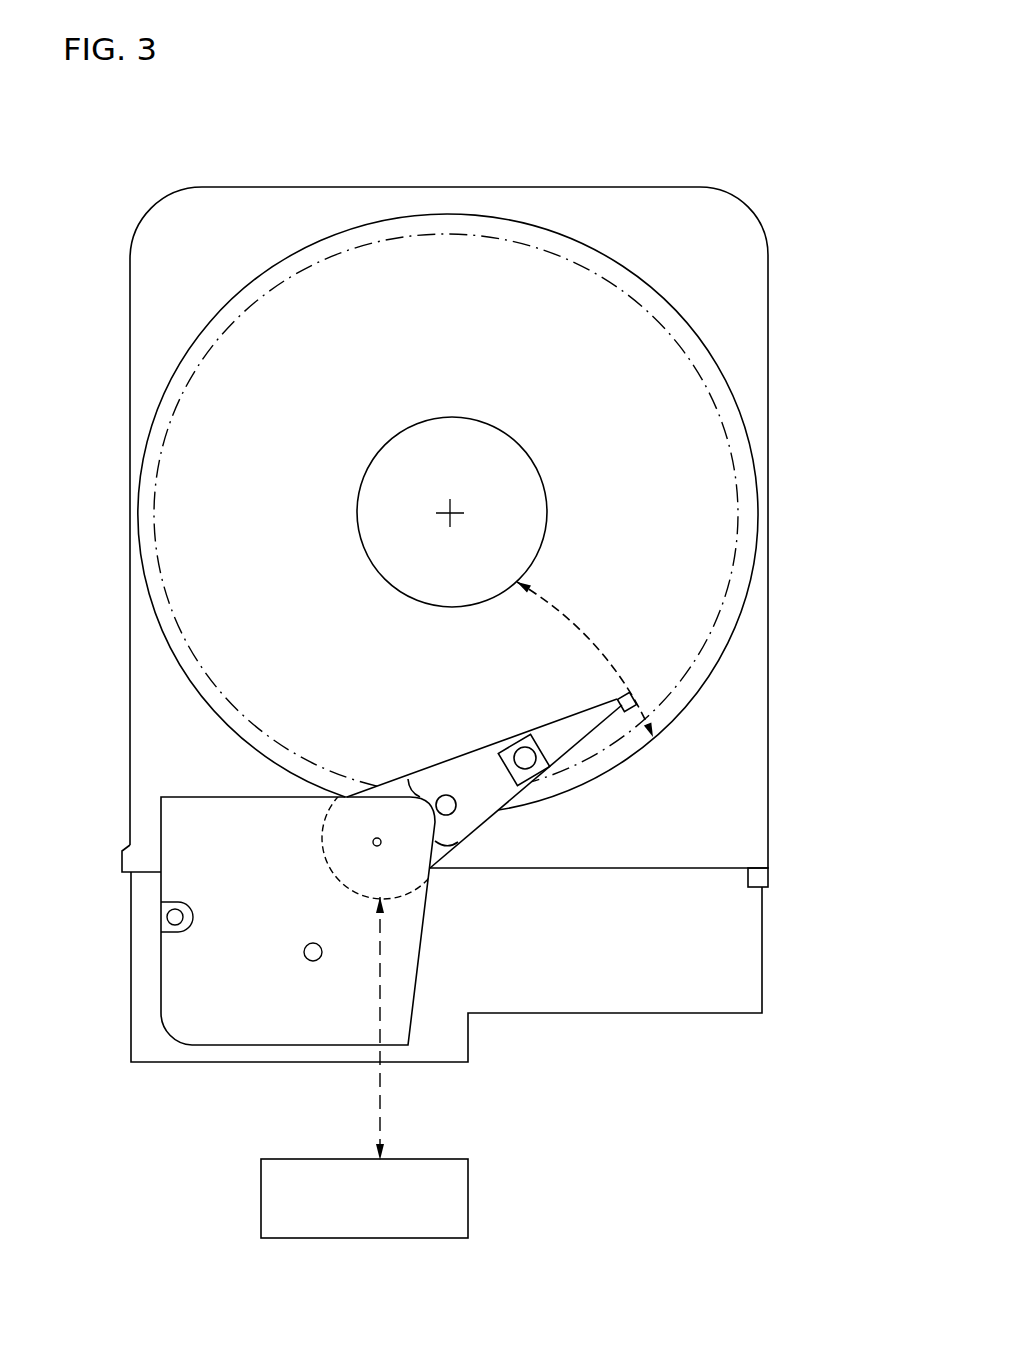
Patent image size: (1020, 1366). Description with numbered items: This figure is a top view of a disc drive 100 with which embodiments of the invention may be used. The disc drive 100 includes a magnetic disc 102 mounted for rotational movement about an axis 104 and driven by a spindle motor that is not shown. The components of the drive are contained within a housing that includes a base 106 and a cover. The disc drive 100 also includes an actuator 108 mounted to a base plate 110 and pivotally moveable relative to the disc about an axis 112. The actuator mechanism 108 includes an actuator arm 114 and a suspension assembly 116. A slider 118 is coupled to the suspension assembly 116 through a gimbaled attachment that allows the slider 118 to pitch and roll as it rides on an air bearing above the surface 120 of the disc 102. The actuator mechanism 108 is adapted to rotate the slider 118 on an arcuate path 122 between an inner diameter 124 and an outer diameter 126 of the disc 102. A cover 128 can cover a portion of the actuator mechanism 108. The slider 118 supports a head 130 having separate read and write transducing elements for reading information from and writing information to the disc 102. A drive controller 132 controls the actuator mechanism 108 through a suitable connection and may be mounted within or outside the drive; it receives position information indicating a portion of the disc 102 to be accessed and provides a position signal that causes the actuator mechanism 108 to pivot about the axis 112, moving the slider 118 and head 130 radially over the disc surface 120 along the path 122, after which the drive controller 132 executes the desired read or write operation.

The disc drive 100 is at (389, 122).
The magnetic disc 102 is at (470, 348).
The axis 104 is at (449, 509).
The base 106 is at (767, 313).
The actuator 108 is at (442, 919).
The base plate 110 is at (678, 1013).
The axis 112 is at (372, 842).
The actuator arm 114 is at (470, 818).
The suspension assembly 116 is at (566, 722).
The slider 118 is at (625, 690).
The surface 120 is at (692, 490).
The arcuate path 122 is at (563, 612).
The inner diameter 124 is at (546, 510).
The outer diameter 126 is at (740, 530).
The cover 128 is at (255, 1018).
The head 130 is at (632, 695).
The drive controller 132 is at (442, 1235).